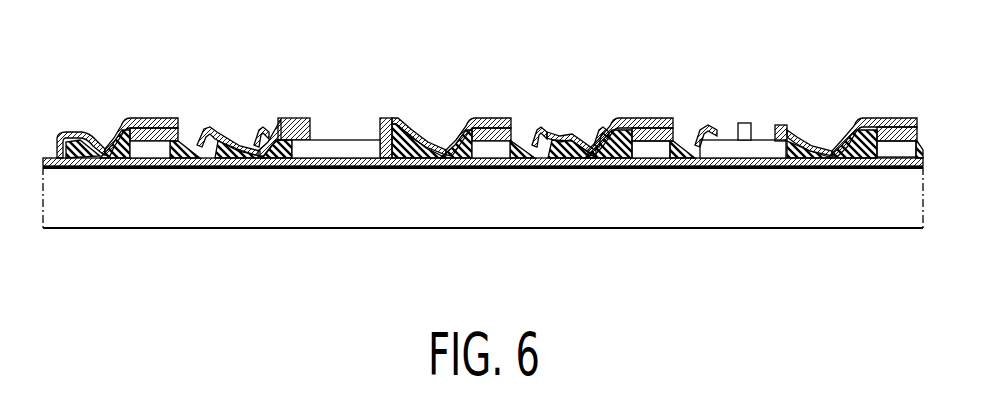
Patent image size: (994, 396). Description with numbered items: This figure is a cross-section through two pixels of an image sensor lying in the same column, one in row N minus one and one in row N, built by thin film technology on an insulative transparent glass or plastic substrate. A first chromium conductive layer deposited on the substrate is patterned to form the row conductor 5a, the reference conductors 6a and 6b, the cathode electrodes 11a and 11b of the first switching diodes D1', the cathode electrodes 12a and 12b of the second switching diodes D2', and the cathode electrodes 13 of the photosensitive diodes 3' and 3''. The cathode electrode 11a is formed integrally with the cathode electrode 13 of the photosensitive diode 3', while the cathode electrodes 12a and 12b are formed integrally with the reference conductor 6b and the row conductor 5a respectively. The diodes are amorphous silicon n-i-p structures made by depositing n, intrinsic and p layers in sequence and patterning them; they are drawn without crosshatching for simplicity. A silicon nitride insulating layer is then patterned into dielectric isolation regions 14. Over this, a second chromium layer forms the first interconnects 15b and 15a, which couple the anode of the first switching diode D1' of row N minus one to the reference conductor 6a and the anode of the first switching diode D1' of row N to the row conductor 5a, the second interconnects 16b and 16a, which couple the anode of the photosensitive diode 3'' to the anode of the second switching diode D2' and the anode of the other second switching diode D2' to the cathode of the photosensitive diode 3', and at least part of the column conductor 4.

The photosensitive diode 3' is at (757, 207).
The photosensitive diode 3'' is at (308, 108).
The column conductor 4 is at (746, 125).
The row conductor 5a is at (547, 167).
The reference conductor 6a is at (45, 156).
The reference conductor 6b is at (921, 175).
The cathode electrode 11a is at (684, 167).
The cathode electrode 11b is at (190, 167).
The cathode electrode 12a is at (868, 167).
The cathode electrode 12b is at (465, 167).
The cathode electrode 13 is at (303, 167).
The dielectric isolation region 14 is at (97, 133).
The first interconnect 15a is at (648, 143).
The first interconnect 15b is at (147, 137).
The second interconnect 16a is at (882, 124).
The second interconnect 16b is at (481, 136).
The first switching diode D1' is at (393, 215).
The second switching diode D2' is at (694, 174).